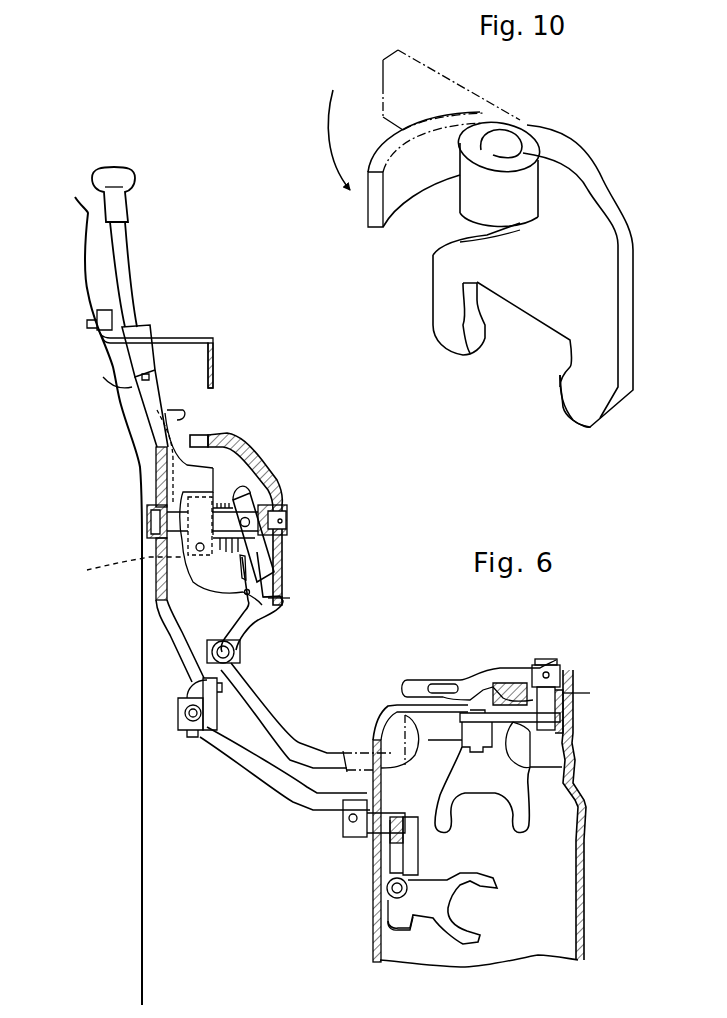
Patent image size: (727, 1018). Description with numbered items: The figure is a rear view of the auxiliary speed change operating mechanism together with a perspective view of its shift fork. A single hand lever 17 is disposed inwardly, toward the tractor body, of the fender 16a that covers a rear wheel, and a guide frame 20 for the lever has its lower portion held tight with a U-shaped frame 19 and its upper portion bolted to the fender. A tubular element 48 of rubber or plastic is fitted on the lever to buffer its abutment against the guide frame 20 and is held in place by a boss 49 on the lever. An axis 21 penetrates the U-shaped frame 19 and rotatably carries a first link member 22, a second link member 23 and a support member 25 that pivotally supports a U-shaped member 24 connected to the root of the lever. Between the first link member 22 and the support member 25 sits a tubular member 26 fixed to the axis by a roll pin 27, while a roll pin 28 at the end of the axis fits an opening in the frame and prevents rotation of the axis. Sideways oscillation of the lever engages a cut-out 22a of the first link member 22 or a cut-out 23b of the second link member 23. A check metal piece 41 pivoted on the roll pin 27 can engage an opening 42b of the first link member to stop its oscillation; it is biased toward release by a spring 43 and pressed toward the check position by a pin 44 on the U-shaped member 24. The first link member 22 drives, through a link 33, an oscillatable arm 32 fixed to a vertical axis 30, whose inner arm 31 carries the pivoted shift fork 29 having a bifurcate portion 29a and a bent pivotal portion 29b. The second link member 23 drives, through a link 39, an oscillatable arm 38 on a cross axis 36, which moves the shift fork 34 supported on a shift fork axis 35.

In FIG. 6, the fender 16a is at (140, 900).
In FIG. 6, the hand lever 17 is at (128, 242).
In FIG. 6, the U-shaped frame 19 is at (150, 507).
In FIG. 6, the guide frame 20 is at (200, 338).
In FIG. 6, the axis 21 is at (147, 523).
In FIG. 6, the first link member 22 is at (266, 638).
In FIG. 6, the cut-out 22a is at (197, 437).
In FIG. 6, the second link member 23 is at (160, 587).
In FIG. 6, the cut-out 23b is at (157, 463).
In FIG. 6, the U-shaped member 24 is at (190, 490).
In FIG. 6, the support member 25 is at (121, 570).
In FIG. 6, the tubular member 26 is at (250, 500).
In FIG. 6, the roll pin 27 is at (240, 523).
In FIG. 6, the roll pin 28 is at (290, 520).
In FIG. 10, the shift fork 29 is at (567, 193).
In FIG. 6, the shift fork 29 is at (520, 807).
In FIG. 10, the bifurcate portion 29a is at (527, 380).
In FIG. 10, the pivotal portion 29b is at (460, 203).
In FIG. 6, the vertical axis 30 is at (550, 700).
In FIG. 6, the oscillatable arm 31 is at (562, 755).
In FIG. 6, the oscillatable arm 32 is at (495, 665).
In FIG. 6, the link 33 is at (297, 740).
In FIG. 6, the shift fork 34 is at (448, 930).
In FIG. 6, the shift fork axis 35 is at (393, 893).
In FIG. 6, the cross axis 36 is at (380, 827).
In FIG. 6, the oscillatable arm 38 is at (262, 763).
In FIG. 6, the link 39 is at (197, 687).
In FIG. 6, the check metal piece 41 is at (270, 600).
In FIG. 6, the opening 42b is at (280, 610).
In FIG. 6, the spring 43 is at (227, 493).
In FIG. 6, the pin 44 is at (280, 593).
In FIG. 6, the tubular element 48 is at (140, 330).
In FIG. 6, the boss 49 is at (103, 377).